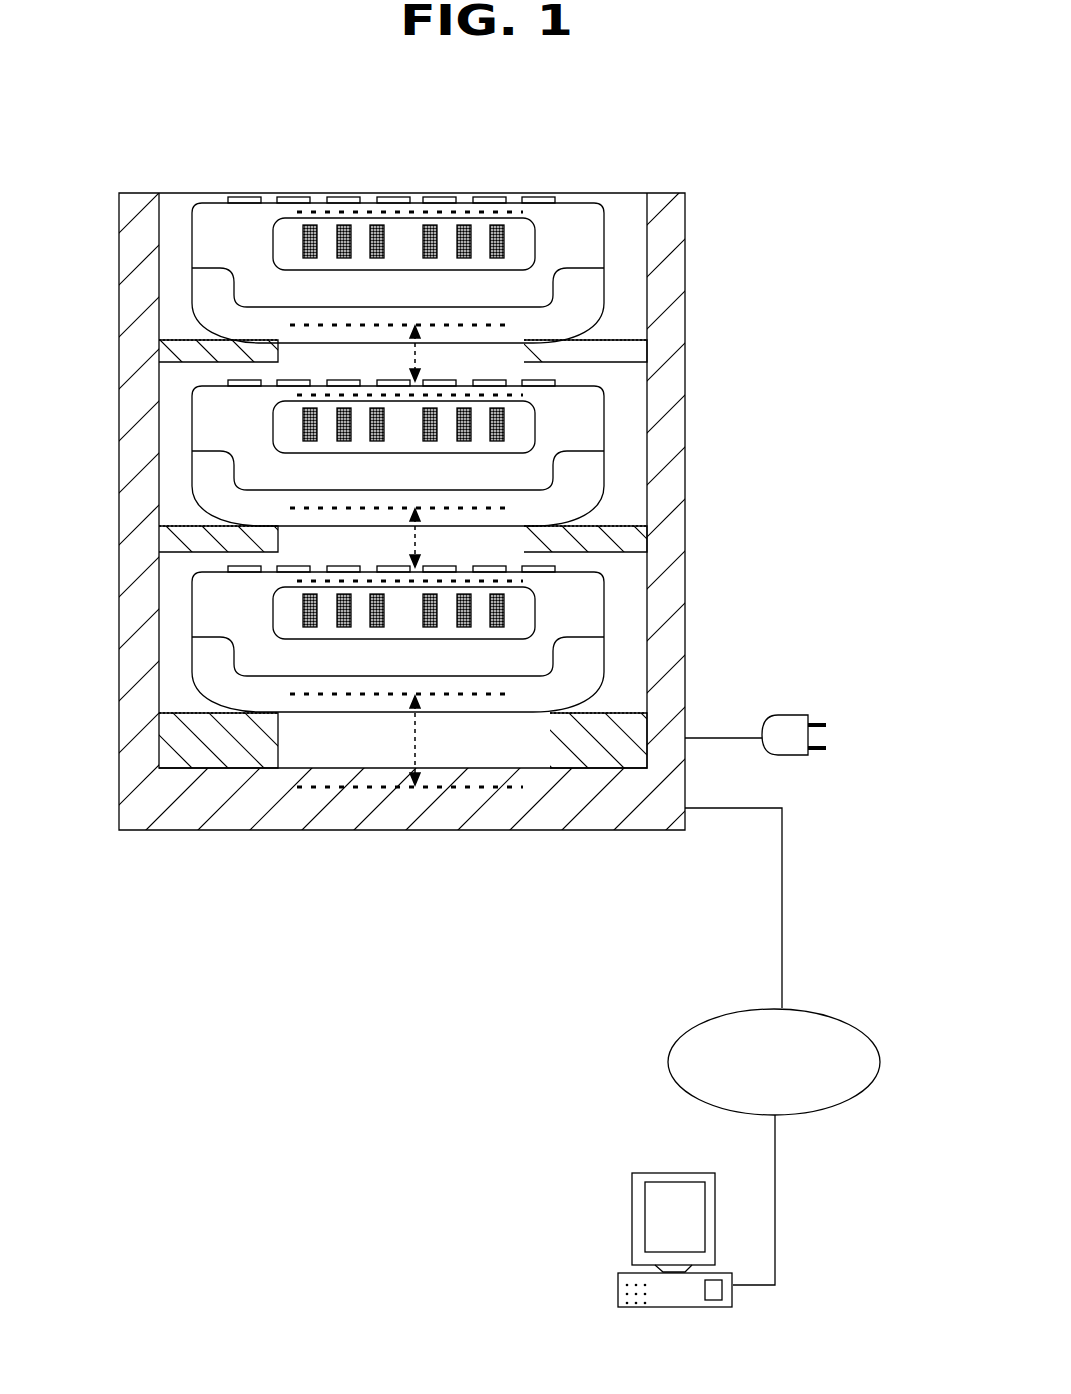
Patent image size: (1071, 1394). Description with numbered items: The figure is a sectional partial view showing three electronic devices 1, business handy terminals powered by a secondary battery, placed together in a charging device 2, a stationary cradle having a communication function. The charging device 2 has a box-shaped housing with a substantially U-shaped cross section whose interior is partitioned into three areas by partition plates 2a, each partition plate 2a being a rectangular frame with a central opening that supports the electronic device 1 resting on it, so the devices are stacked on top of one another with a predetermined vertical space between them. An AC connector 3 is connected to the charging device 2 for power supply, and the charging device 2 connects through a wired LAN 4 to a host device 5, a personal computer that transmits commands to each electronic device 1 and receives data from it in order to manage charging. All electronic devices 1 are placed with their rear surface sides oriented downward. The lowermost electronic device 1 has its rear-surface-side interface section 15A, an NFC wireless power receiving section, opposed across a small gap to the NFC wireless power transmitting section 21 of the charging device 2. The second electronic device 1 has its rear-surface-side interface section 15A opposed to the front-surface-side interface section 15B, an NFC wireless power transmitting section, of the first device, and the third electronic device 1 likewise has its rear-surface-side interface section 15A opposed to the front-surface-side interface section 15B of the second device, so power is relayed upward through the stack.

The electronic device 1 is at (585, 255).
The charging device 2 is at (689, 433).
The partition plate 2a is at (622, 350).
The AC connector 3 is at (797, 713).
The wired LAN 4 is at (822, 1011).
The host device 5 is at (632, 1242).
The rear-surface-side interface section 15A is at (307, 698).
The front-surface-side interface section 15B is at (518, 394).
The NFC wireless power transmitting section 21 is at (490, 788).